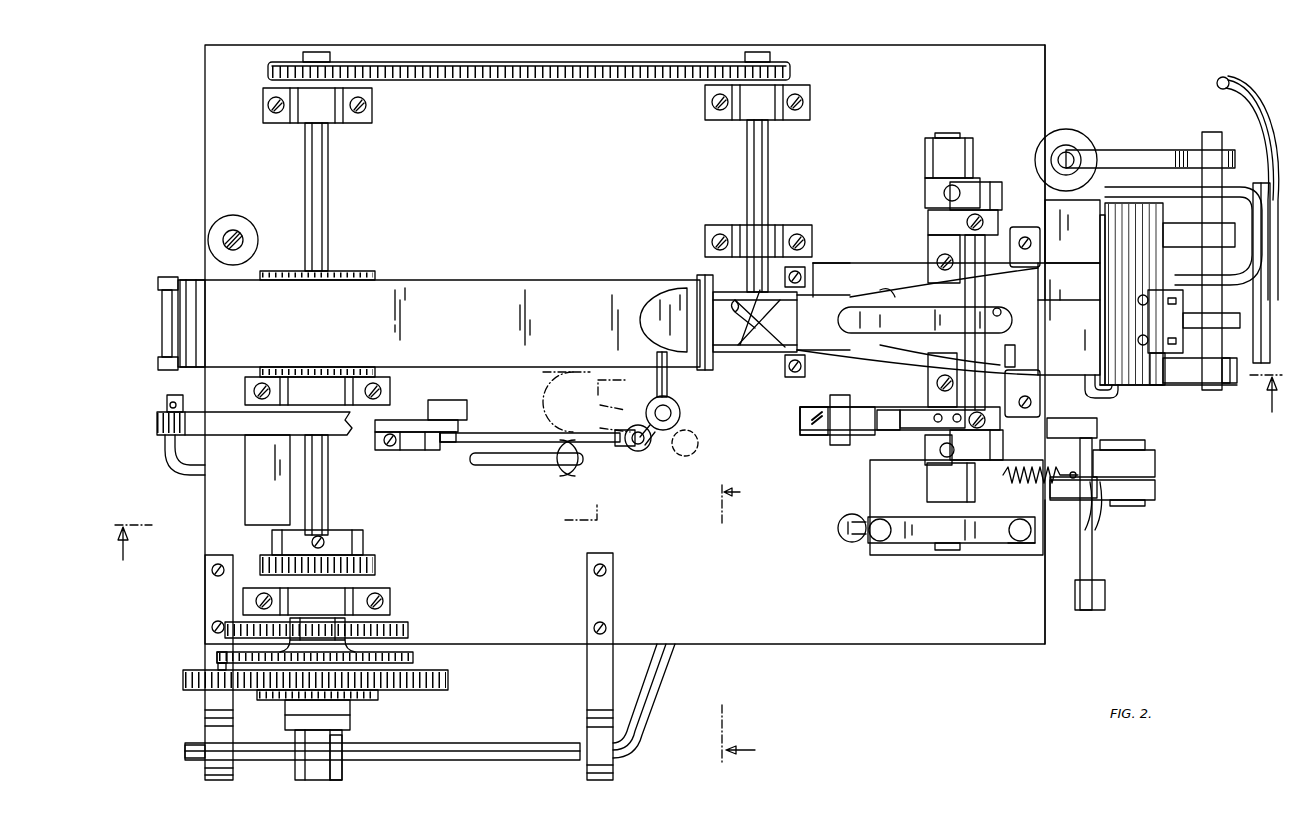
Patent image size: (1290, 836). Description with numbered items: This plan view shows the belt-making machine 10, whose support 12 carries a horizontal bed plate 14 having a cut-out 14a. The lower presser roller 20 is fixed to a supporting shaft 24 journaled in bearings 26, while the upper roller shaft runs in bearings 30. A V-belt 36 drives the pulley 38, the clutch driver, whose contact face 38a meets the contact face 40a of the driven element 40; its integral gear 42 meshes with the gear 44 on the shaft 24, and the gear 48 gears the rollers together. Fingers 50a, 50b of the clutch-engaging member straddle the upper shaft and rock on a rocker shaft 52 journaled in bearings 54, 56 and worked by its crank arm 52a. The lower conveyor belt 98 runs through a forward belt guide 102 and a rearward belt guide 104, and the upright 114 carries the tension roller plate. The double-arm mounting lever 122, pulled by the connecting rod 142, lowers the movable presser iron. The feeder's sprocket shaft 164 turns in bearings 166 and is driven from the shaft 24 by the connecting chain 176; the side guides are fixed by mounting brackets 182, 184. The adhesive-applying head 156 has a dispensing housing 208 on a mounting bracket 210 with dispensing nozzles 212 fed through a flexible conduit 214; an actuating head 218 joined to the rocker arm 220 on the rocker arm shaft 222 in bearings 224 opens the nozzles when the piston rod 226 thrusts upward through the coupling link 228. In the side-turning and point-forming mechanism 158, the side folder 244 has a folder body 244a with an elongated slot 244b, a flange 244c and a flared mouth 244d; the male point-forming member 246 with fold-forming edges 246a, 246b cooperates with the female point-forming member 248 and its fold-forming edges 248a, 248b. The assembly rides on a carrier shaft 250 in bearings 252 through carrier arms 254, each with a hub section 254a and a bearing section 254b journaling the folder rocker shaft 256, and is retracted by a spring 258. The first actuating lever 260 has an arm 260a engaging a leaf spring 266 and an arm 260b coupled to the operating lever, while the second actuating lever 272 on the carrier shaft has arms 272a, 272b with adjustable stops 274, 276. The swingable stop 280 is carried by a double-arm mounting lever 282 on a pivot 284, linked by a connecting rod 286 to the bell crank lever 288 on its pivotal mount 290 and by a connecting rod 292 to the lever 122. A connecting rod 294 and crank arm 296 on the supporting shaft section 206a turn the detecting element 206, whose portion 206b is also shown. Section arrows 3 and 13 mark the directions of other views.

The belt-making machine 10 is at (1183, 605).
The support 12 is at (897, 647).
The bed plate 14 is at (977, 627).
The cut-out 14a is at (840, 265).
The lower presser roller 20 is at (346, 272).
The supporting shaft 24 is at (330, 207).
The bearings 26 is at (340, 118).
The bearings 30 is at (330, 497).
The V-belt 36 is at (450, 680).
The pulley 38 is at (380, 695).
The contact face 38a is at (222, 670).
The driven element 40 is at (415, 657).
The contact face 40a is at (216, 655).
The gear 42 is at (320, 618).
The gear 44 is at (410, 628).
The gear 48 is at (380, 558).
The finger 50a is at (296, 770).
The finger 50b is at (343, 766).
The rocker shaft 52 is at (495, 742).
The crank arm 52a is at (660, 700).
The bearing 54 is at (205, 772).
The bearing 56 is at (597, 738).
The lower conveyor belt 98 is at (450, 285).
The forward belt guide 102 is at (697, 270).
The rearward belt guide 104 is at (162, 368).
The upright 114 is at (240, 234).
The double-arm mounting lever 122 is at (165, 426).
The connecting rod 142 is at (508, 466).
The adhesive-applying head 156 is at (1185, 388).
The side-turning and point-forming mechanism 158 is at (888, 292).
The sprocket shaft 164 is at (770, 160).
The bearings 166 is at (745, 112).
The connecting chain 176 is at (573, 80).
The mounting bracket 182 is at (790, 378).
The mounting bracket 184 is at (1035, 372).
The detecting element 206 is at (1115, 398).
The supporting shaft section 206a is at (1100, 545).
The rod 206b is at (1252, 275).
The dispensing housing 208 is at (1145, 202).
The mounting bracket 210 is at (1050, 210).
The dispensing nozzles 212 is at (1150, 350).
The flexible conduit 214 is at (1228, 76).
The actuating head 218 is at (1158, 385).
The rocker arm 220 is at (1200, 322).
The rocker arm shaft 222 is at (1212, 132).
The bearings 224 is at (1236, 383).
The piston rod 226 is at (1066, 152).
The coupling link 228 is at (1117, 150).
The side folder 244 is at (848, 295).
The folder body 244a is at (908, 345).
The elongated slot 244b is at (1000, 308).
The flange 244c is at (1090, 360).
The flared mouth 244d is at (1042, 333).
The male point-forming member 246 is at (800, 333).
The fold-forming edge 246a is at (775, 318).
The fold-forming edge 246b is at (745, 300).
The female point-forming member 248 is at (715, 355).
The fold-forming edge 248a is at (760, 322).
The fold-forming edge 248b is at (740, 305).
The carrier shaft 250 is at (945, 543).
The bearings 252 is at (925, 150).
The carrier arms 254 is at (940, 455).
The hub section 254a is at (925, 186).
The bearing section 254b is at (990, 185).
The folder rocker shaft 256 is at (1010, 375).
The spring 258 is at (1025, 485).
The first actuating lever 260 is at (830, 432).
The arm 260a is at (864, 412).
The arm 260b is at (800, 425).
The leaf spring 266 is at (890, 412).
The second actuating lever 272 is at (905, 543).
The arm 272a is at (1018, 548).
The arm 272b is at (872, 540).
The adjustable stop 274 is at (1020, 545).
The adjustable stop 276 is at (880, 545).
The stop 280 is at (650, 320).
The double-arm mounting lever 282 is at (655, 385).
The pivot 284 is at (681, 415).
The connecting rod 286 is at (520, 428).
The bell crank lever 288 is at (418, 452).
The pivotal mount 290 is at (447, 443).
The connecting rod 292 is at (391, 448).
The connecting rod 294 is at (190, 474).
The crank arm 296 is at (1160, 492).
The section line 3 is at (698, 470).
The section line 13 is at (672, 572).